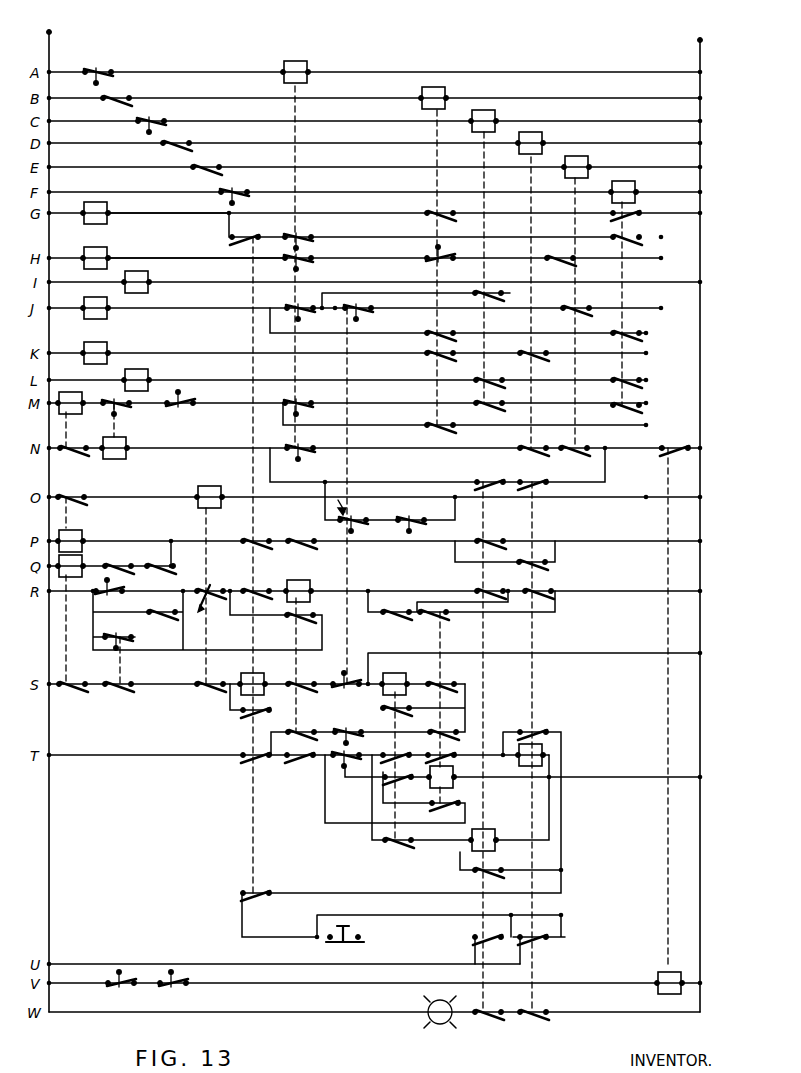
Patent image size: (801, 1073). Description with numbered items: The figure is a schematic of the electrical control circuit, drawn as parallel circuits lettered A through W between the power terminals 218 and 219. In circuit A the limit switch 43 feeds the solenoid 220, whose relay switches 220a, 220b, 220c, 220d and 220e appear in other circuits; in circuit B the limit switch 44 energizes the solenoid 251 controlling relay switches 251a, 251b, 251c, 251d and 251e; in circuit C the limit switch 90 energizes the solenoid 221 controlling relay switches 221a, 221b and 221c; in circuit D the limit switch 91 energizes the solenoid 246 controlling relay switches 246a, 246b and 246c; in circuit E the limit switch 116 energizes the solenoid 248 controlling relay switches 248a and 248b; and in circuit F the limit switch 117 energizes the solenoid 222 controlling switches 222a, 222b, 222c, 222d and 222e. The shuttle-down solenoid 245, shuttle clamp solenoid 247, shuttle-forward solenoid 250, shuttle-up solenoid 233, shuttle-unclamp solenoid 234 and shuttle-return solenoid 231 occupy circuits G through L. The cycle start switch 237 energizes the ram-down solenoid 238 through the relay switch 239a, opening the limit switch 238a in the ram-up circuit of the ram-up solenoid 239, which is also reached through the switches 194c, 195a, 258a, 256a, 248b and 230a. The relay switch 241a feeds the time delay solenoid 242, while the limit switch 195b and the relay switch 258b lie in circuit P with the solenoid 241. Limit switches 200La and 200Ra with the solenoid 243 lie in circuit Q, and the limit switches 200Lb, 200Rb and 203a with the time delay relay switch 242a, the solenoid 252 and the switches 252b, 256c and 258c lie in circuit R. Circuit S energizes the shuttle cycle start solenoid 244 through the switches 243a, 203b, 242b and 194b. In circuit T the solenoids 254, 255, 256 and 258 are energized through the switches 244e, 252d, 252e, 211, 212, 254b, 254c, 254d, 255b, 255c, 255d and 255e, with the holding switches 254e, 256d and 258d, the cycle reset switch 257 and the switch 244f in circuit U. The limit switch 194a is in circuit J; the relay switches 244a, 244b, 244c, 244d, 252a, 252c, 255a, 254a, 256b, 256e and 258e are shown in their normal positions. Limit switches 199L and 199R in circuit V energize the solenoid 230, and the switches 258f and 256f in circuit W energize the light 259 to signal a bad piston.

The electrical power terminal 218 is at (52, 33).
The electrical power terminal 219 is at (698, 41).
The limit switch 43 is at (92, 68).
The limit switch 44 is at (113, 95).
The limit switch 90 is at (147, 118).
The limit switch 91 is at (174, 140).
The limit switch 116 is at (204, 164).
The limit switch 117 is at (232, 190).
The solenoid 220 is at (307, 60).
The solenoid 251 is at (444, 90).
The solenoid 221 is at (494, 114).
The solenoid 246 is at (543, 137).
The solenoid 248 is at (588, 161).
The solenoid 222 is at (635, 187).
The limit switch 222a is at (637, 210).
The limit switch 222b is at (633, 236).
The shuttle-down solenoid 245 is at (108, 208).
The shuttle clamp solenoid 247 is at (108, 250).
The shuttle-forward solenoid 250 is at (148, 276).
The shuttle-up solenoid 233 is at (108, 302).
The shuttle-unclamp solenoid 234 is at (108, 345).
The shuttle-return solenoid 231 is at (148, 374).
The ram-down solenoid 238 is at (86, 376).
The cycle start switch 237 is at (188, 395).
The relay switch 239a is at (120, 412).
The limit switch 238a is at (74, 446).
The ram-up solenoid 239 is at (126, 442).
The relay switch 241a is at (72, 492).
The time delay solenoid 242 is at (220, 485).
The solenoid 241 is at (72, 530).
The limit switch 200Ra is at (168, 560).
The solenoid 243 is at (80, 560).
The limit switch 200La is at (120, 576).
The limit switch 200Lb is at (100, 598).
The limit switch 200Rb is at (162, 617).
The limit switch 203a is at (130, 644).
The relay switch 243a is at (80, 692).
The limit switch 203b is at (125, 692).
The shuttle cycle start solenoid 244 is at (250, 673).
The limit switch 242b is at (215, 692).
The relay switch 244d is at (250, 718).
The relay switch 252d is at (290, 740).
The relay switch 244e is at (250, 762).
The relay switch 252e is at (305, 765).
The limit switch 212 is at (346, 770).
The limit switch 211 is at (340, 728).
The limit switch 194b is at (345, 690).
The relay switch 252c is at (298, 678).
The relay switch 252b is at (302, 625).
The time delay relay switch 242a is at (210, 590).
The relay switch 244c is at (268, 579).
The solenoid 252 is at (298, 585).
The relay switch 244b is at (265, 527).
The relay switch 252a is at (315, 532).
The limit switch 194c is at (352, 514).
The limit switch 195a is at (410, 516).
The limit switch 195b is at (403, 532).
The relay switch 220a is at (296, 233).
The relay switch 220b is at (298, 256).
The relay switch 220c is at (295, 306).
The relay switch 220d is at (297, 400).
The relay switch 220e is at (295, 458).
The limit switch 194a is at (352, 316).
The relay switch 244a is at (248, 242).
The relay switch 251a is at (435, 218).
The relay switch 251b is at (436, 256).
The relay switch 251c is at (436, 338).
The relay switch 251d is at (436, 360).
The relay switch 251e is at (436, 431).
The relay switch 221a is at (505, 284).
The relay switch 221b is at (488, 386).
The relay switch 221c is at (488, 409).
The relay switch 246a is at (547, 265).
The relay switch 246b is at (526, 352).
The relay switch 246c is at (526, 446).
The relay switch 248a is at (582, 314).
The relay switch 248b is at (574, 453).
The limit switch 222c is at (626, 338).
The limit switch 222d is at (622, 378).
The limit switch 222e is at (624, 410).
The relay switch 230a is at (675, 443).
The relay switch 258a is at (482, 478).
The relay switch 256a is at (565, 478).
The relay switch 258b is at (490, 539).
The relay switch 256b is at (545, 569).
The relay switch 258c is at (485, 588).
The relay switch 256c is at (552, 596).
The relay switch 255a is at (395, 618).
The relay switch 254a is at (442, 618).
The solenoid 255 is at (394, 678).
The relay switch 254b is at (445, 681).
The relay switch 255b is at (392, 708).
The relay switch 254c is at (445, 728).
The limit switch 254d is at (450, 748).
The relay switch 256d is at (540, 725).
The solenoid 256 is at (542, 750).
The relay switch 255c is at (390, 750).
The relay switch 255d is at (395, 783).
The solenoid 254 is at (445, 788).
The limit switch 254e is at (442, 808).
The solenoid 258 is at (487, 832).
The relay switch 255e is at (400, 850).
The relay switch 258d is at (490, 878).
The relay switch 244f is at (256, 888).
The cycle reset switch 257 is at (330, 945).
The relay switch 258e is at (482, 933).
The relay switch 256e is at (535, 940).
The solenoid 230 is at (664, 968).
The light 259 is at (428, 1008).
The relay switch 258f is at (500, 1020).
The relay switch 256f is at (535, 1020).
The limit switch 199L is at (116, 988).
The limit switch 199R is at (168, 988).